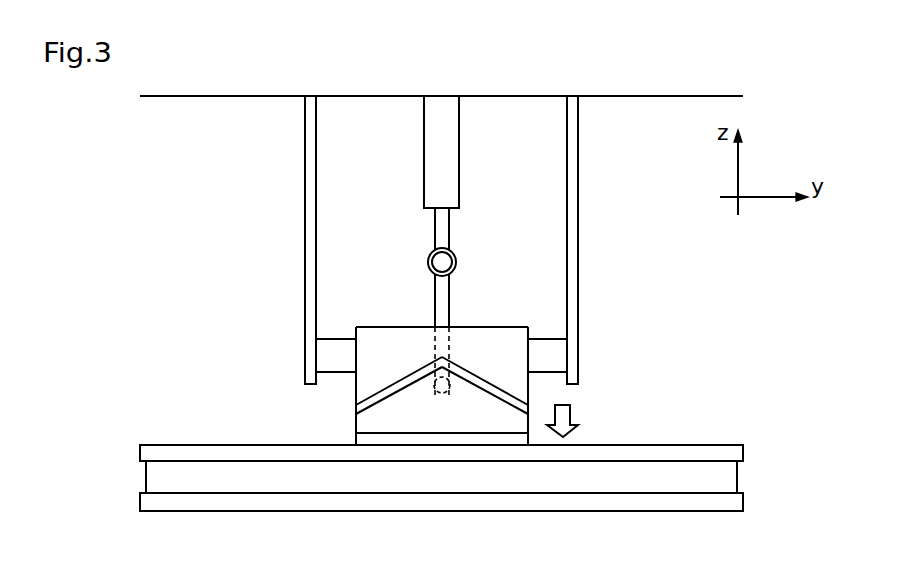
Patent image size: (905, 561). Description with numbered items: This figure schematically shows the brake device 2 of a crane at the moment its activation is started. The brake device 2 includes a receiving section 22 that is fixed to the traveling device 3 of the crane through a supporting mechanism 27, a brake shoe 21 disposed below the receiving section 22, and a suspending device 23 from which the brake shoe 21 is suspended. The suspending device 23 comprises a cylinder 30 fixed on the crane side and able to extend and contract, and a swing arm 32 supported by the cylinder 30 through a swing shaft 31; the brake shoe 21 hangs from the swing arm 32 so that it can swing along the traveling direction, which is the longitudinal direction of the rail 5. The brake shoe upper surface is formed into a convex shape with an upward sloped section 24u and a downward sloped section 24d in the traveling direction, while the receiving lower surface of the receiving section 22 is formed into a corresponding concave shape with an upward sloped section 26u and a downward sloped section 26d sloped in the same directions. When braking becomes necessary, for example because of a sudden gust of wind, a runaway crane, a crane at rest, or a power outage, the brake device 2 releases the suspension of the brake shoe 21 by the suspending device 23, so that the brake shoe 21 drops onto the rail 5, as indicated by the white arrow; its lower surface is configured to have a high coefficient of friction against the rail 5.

The brake device 2 is at (407, 286).
The traveling device 3 is at (669, 78).
The rail 5 is at (177, 446).
The brake shoe 21 is at (456, 431).
The receiving section 22 is at (442, 411).
The suspending device 23 is at (430, 240).
The upward sloped section of the brake shoe upper surface 24u is at (382, 409).
The downward sloped section of the brake shoe upper surface 24d is at (505, 409).
The upward sloped section of the receiving lower surface 26u is at (386, 382).
The downward sloped section of the receiving lower surface 26d is at (491, 377).
The supporting mechanism 27 is at (310, 215).
The cylinder 30 is at (450, 125).
The swing shaft 31 is at (446, 260).
The swing arm 32 is at (442, 310).